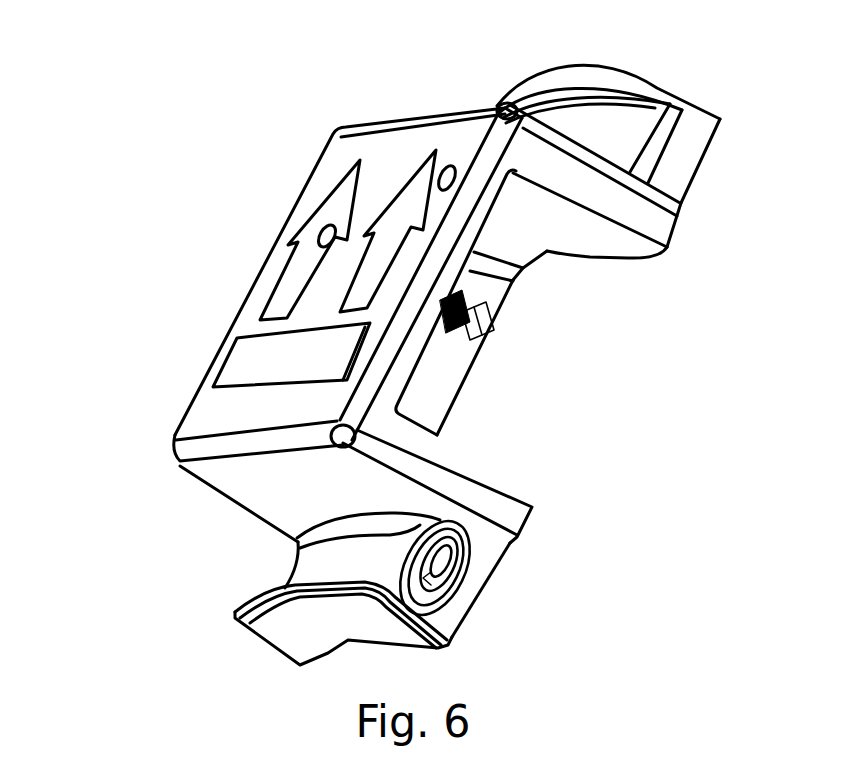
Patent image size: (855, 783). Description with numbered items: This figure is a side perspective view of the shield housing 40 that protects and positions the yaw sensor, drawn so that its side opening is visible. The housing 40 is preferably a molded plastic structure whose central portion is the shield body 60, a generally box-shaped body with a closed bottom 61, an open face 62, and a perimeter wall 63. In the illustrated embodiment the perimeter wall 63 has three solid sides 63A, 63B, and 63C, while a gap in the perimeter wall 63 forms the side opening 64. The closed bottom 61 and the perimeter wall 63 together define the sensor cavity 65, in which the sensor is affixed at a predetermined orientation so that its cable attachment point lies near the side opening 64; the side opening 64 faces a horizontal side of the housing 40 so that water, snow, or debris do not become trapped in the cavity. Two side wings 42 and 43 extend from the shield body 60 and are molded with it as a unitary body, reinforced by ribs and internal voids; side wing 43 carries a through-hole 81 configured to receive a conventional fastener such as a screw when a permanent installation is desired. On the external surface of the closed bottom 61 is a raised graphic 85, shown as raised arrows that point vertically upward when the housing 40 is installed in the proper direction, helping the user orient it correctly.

The shield housing 40 is at (237, 252).
The closed bottom 61 is at (384, 158).
The raised graphic 85 is at (315, 210).
The shield body 60 is at (446, 98).
The side wing 42 is at (693, 128).
The solid side 63C is at (573, 232).
The side opening 64 is at (548, 322).
The open face 62 is at (570, 393).
The solid side 63B is at (430, 397).
The sensor cavity 65 is at (470, 290).
The perimeter wall 63 is at (243, 478).
The solid side 63A is at (290, 493).
The side wing 43 is at (288, 633).
The through-hole 81 is at (408, 612).